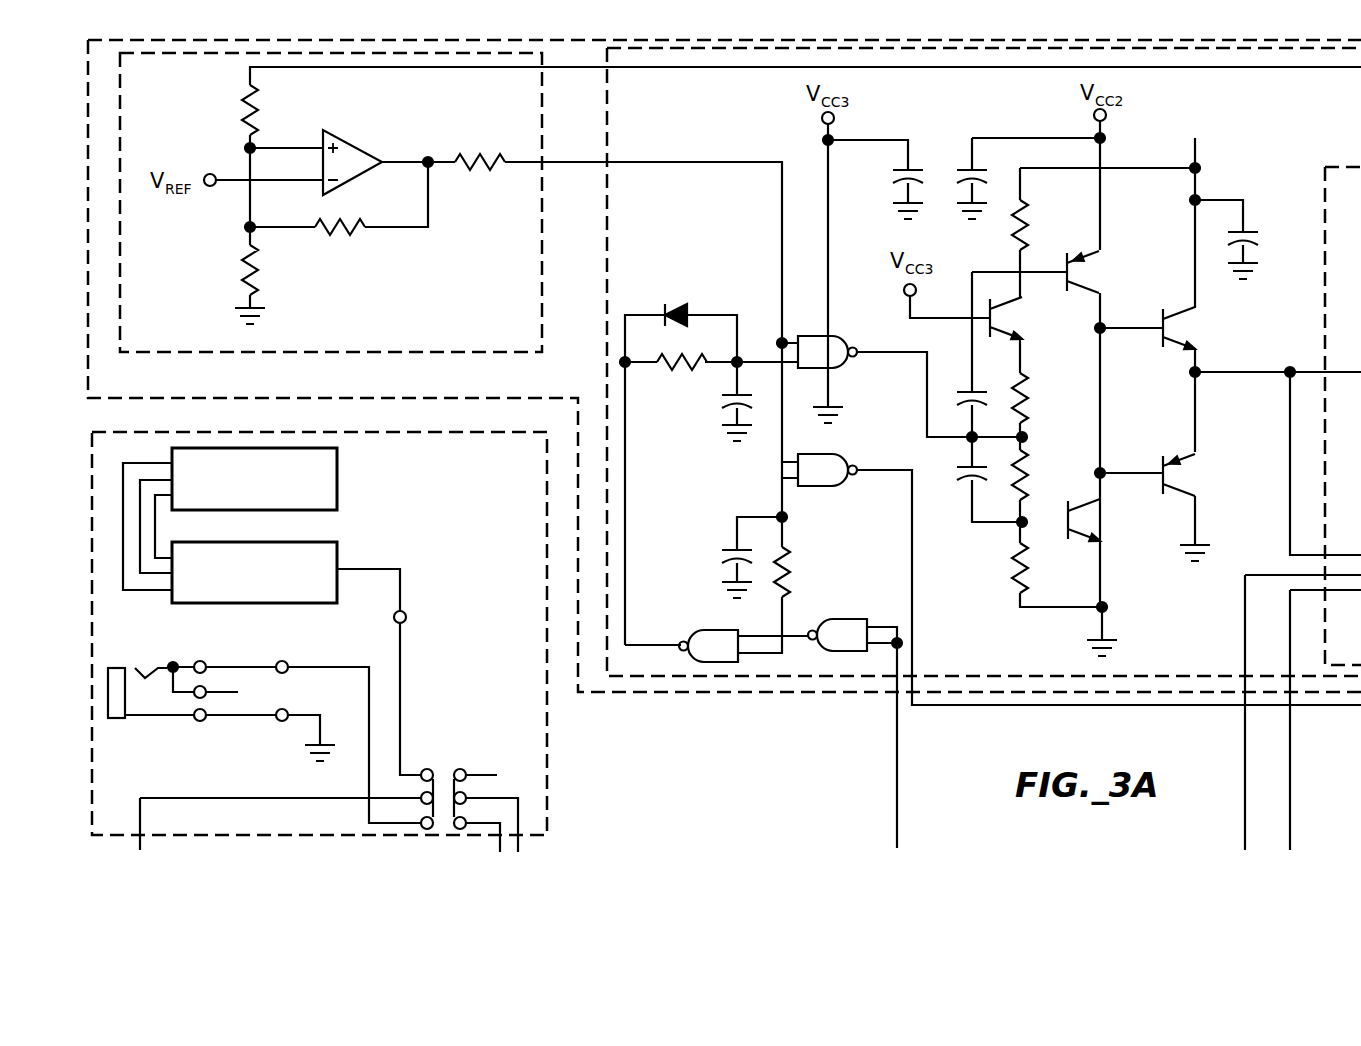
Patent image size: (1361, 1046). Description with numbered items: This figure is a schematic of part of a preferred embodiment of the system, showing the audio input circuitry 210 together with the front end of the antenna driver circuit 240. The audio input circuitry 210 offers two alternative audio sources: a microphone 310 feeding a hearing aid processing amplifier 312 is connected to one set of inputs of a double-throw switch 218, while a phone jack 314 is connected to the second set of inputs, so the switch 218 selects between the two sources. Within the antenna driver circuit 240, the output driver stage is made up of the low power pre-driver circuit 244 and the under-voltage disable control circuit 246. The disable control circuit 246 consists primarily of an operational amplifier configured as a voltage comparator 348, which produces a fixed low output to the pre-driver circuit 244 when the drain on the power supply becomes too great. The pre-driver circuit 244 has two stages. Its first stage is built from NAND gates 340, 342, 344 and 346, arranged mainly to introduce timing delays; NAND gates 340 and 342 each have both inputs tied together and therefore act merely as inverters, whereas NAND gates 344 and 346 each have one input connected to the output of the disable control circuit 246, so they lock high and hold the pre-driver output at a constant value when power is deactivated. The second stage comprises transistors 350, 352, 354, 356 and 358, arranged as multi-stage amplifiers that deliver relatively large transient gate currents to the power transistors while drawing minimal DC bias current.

The audio input circuitry 210 is at (547, 787).
The double-throw switch 218 is at (446, 758).
The antenna driver circuit 240 is at (670, 694).
The pre-driver circuit 244 is at (607, 370).
The under-voltage disable control circuit 246 is at (185, 352).
The microphone 310 is at (337, 482).
The hearing aid processing amplifier 312 is at (337, 548).
The phone jack 314 is at (141, 658).
The NAND gate 340 is at (836, 619).
The NAND gate 342 is at (712, 630).
The NAND gate 344 is at (823, 487).
The NAND gate 346 is at (845, 368).
The voltage comparator 348 is at (353, 138).
The transistor 350 is at (1014, 302).
The transistor 352 is at (1090, 283).
The transistor 354 is at (1100, 505).
The transistor 356 is at (1185, 325).
The transistor 358 is at (1187, 495).